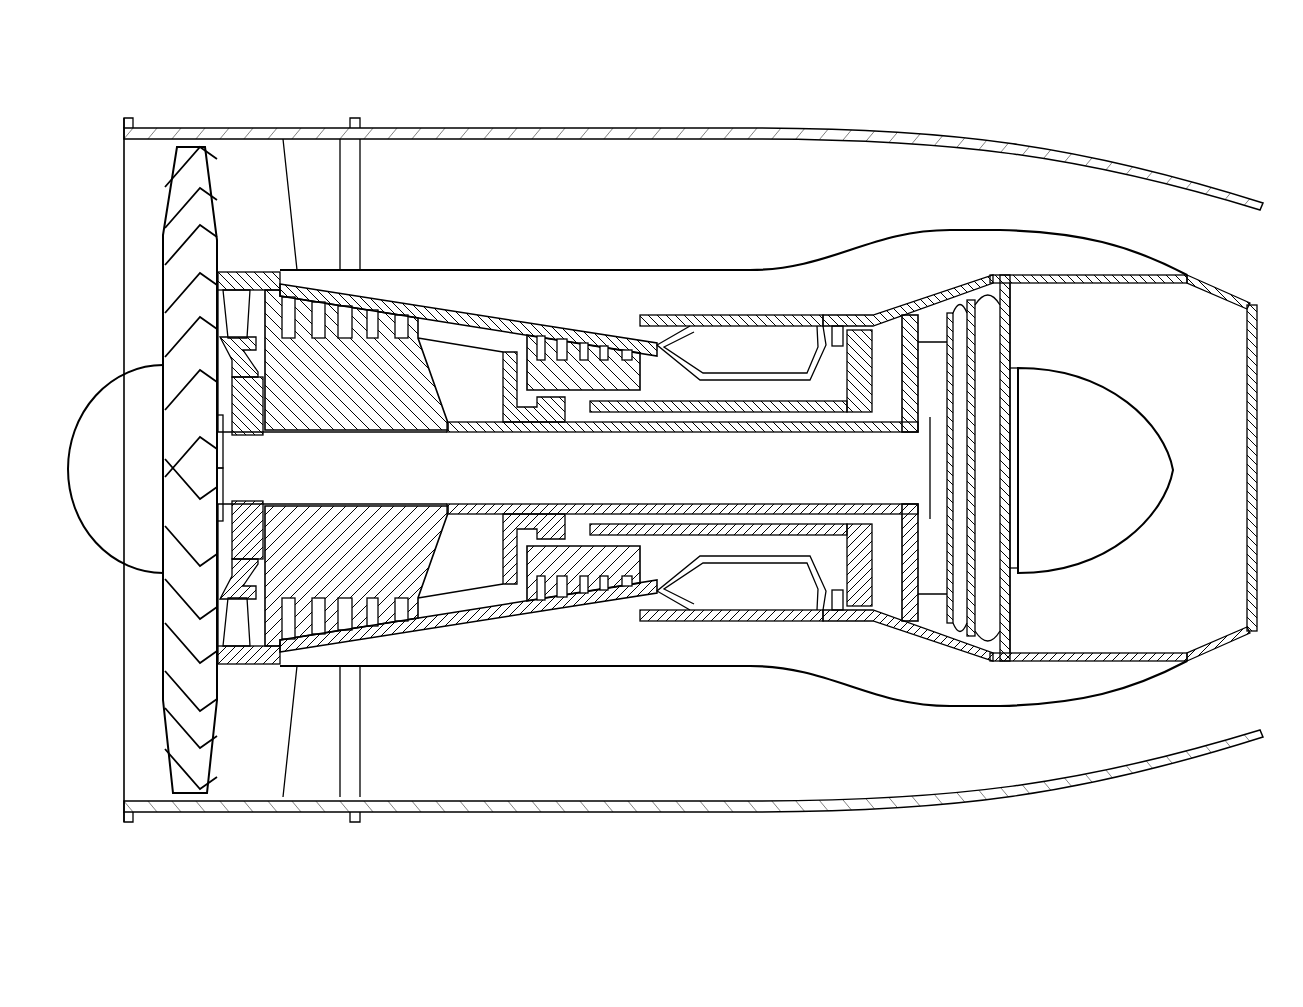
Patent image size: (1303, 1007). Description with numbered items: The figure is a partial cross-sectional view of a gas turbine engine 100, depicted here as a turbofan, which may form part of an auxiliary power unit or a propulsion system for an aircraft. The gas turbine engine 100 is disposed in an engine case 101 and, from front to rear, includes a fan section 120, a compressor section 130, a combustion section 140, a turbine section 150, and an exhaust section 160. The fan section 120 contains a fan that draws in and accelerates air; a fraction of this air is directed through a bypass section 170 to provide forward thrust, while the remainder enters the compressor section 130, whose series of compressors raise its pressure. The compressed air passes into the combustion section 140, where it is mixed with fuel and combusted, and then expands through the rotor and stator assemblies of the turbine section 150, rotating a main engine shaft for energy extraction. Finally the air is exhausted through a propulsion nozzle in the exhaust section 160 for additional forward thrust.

The gas turbine engine 100 is at (1127, 98).
The engine case 101 is at (472, 128).
The bypass section 170 is at (640, 167).
The fan section 120 is at (227, 828).
The compressor section 130 is at (227, 828).
The combustion section 140 is at (617, 828).
The turbine section 150 is at (848, 828).
The exhaust section 160 is at (1045, 828).